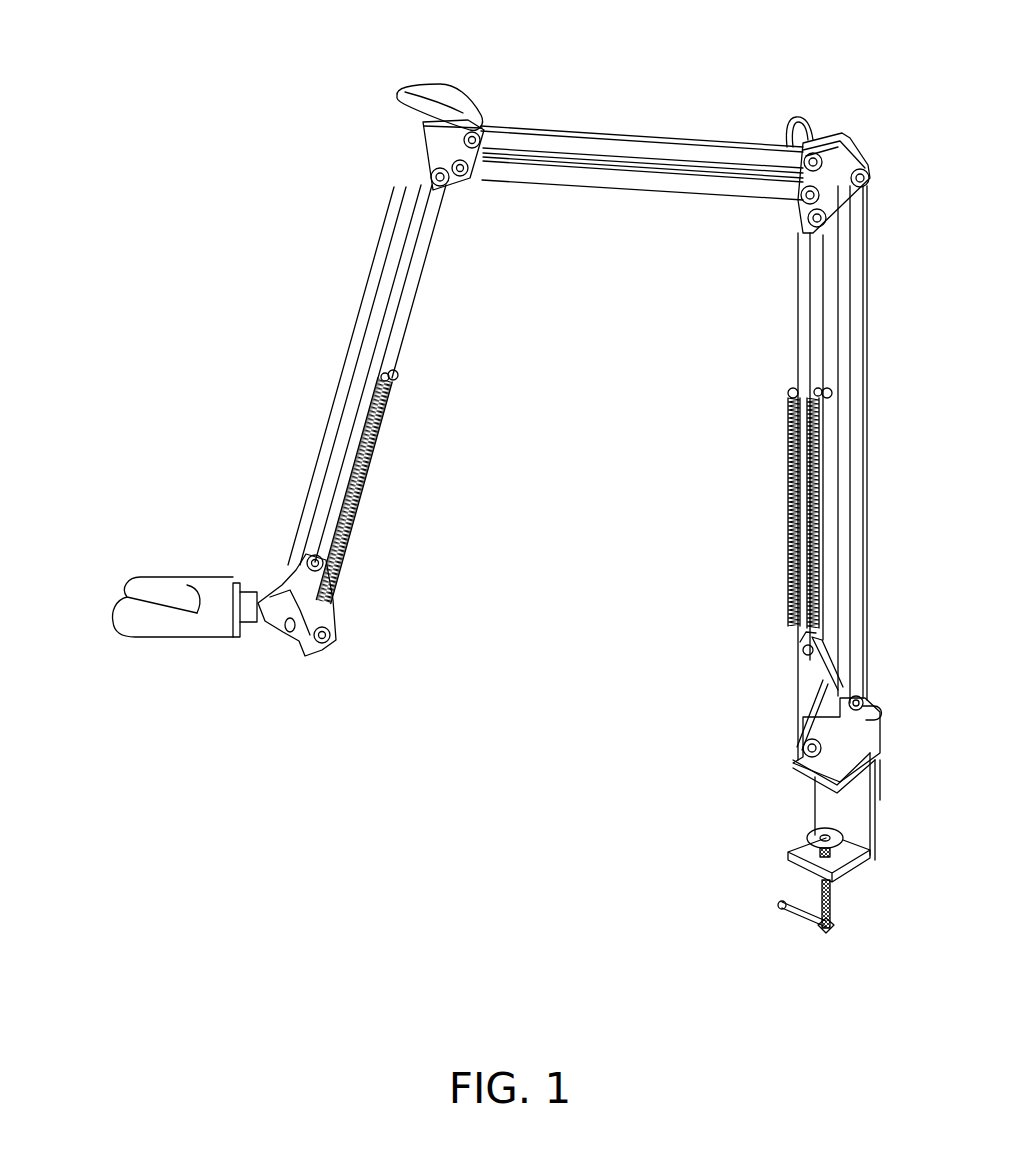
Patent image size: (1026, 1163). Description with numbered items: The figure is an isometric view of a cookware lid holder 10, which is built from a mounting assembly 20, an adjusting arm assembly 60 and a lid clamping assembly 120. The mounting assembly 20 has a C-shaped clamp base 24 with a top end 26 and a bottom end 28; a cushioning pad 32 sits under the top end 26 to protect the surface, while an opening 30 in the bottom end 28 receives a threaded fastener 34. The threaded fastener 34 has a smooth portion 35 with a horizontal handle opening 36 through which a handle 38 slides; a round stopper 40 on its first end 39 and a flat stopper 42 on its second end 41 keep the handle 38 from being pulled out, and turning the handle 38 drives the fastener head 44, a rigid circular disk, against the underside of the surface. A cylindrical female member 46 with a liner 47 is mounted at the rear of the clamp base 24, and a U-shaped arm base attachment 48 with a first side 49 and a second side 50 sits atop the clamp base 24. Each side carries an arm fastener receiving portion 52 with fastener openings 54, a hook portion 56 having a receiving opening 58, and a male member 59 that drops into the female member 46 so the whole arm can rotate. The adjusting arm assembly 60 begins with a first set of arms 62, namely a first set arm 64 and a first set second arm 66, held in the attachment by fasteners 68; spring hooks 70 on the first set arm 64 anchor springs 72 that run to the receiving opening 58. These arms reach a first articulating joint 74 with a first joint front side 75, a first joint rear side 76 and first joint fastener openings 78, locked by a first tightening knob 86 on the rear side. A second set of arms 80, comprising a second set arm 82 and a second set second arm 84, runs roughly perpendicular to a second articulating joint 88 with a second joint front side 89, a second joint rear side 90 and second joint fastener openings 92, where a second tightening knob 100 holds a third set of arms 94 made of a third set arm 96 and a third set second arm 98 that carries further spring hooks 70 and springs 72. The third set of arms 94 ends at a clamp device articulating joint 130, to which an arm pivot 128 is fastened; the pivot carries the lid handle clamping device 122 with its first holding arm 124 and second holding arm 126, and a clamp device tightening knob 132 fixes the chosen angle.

The cookware lid holder 10 is at (234, 48).
The mounting assembly 20 is at (880, 840).
The clamp base 24 is at (828, 800).
The top end 26 is at (880, 772).
The bottom end 28 is at (847, 858).
The opening 30 is at (852, 803).
The cushioning pad 32 is at (805, 772).
The threaded fastener 34 is at (835, 887).
The smooth portion 35 is at (825, 940).
The handle opening 36 is at (830, 932).
The handle 38 is at (785, 915).
The first end 39 is at (840, 925).
The round stopper 40 is at (825, 935).
The second end 41 is at (785, 905).
The flat stopper 42 is at (790, 905).
The fastener head 44 is at (822, 838).
The female member 46 is at (882, 788).
The liner 47 is at (882, 760).
The arm base attachment 48 is at (876, 727).
The first side 49 is at (850, 690).
The second side 50 is at (792, 642).
The arm fastener receiving portion 52 is at (822, 725).
The fastener openings 54 is at (862, 698).
The hook portion 56 is at (830, 668).
The receiving opening 58 is at (808, 652).
The male member 59 is at (878, 710).
The adjusting arm assembly 60 is at (868, 395).
The first set of arms 62 is at (870, 352).
The first set arm 64 is at (812, 272).
The first set second arm 66 is at (868, 258).
The fasteners 68 is at (432, 178).
The spring hooks 70 is at (400, 375).
The springs 72 is at (380, 445).
The first articulating joint 74 is at (866, 168).
The first joint front side 75 is at (850, 158).
The first joint rear side 76 is at (833, 135).
The first joint fastener openings 78 is at (800, 218).
The second set of arms 80 is at (615, 140).
The second set arm 82 is at (610, 185).
The second set second arm 84 is at (560, 145).
The first tightening knob 86 is at (800, 120).
The second articulating joint 88 is at (425, 148).
The second joint front side 89 is at (445, 152).
The second joint rear side 90 is at (437, 86).
The second joint fastener openings 92 is at (462, 180).
The third set of arms 94 is at (352, 335).
The third set arm 96 is at (330, 470).
The third set second arm 98 is at (408, 315).
The second tightening knob 100 is at (466, 118).
The lid clamping assembly 120 is at (228, 645).
The lid handle clamping device 122 is at (160, 575).
The first holding arm 124 is at (130, 630).
The second holding arm 126 is at (130, 590).
The arm pivot 128 is at (245, 600).
The clamp device articulating joint 130 is at (318, 605).
The clamp device tightening knob 132 is at (297, 655).